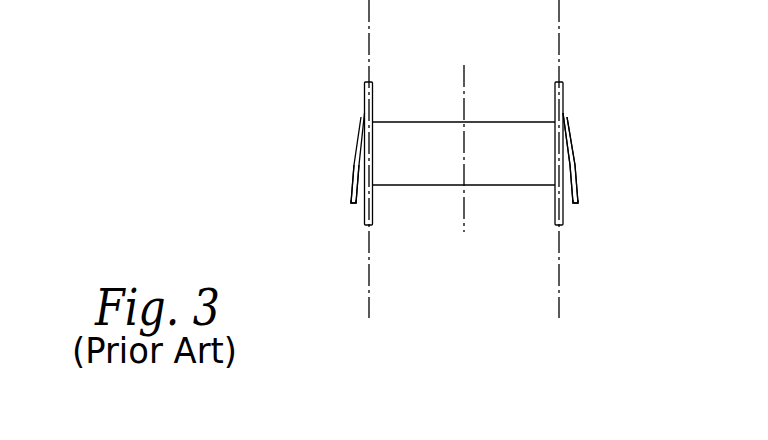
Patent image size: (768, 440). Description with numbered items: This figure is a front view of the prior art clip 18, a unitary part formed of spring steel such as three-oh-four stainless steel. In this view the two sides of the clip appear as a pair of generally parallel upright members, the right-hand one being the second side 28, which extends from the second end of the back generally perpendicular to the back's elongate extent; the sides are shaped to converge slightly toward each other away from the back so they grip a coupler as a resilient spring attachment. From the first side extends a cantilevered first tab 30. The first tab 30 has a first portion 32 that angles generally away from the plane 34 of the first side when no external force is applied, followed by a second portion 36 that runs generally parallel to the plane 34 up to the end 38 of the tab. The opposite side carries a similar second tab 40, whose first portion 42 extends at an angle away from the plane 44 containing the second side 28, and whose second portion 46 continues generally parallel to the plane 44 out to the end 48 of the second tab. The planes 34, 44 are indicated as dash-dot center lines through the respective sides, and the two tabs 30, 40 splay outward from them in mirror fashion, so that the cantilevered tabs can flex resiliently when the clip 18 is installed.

The clip 18 is at (697, 92).
The second side 28 is at (565, 90).
The first tab 30 is at (354, 156).
The first portion 32 is at (361, 131).
The plane 34 is at (370, 272).
The second portion 36 is at (350, 183).
The end 38 is at (353, 206).
The second tab 40 is at (576, 149).
The first portion 42 is at (568, 128).
The plane 44 is at (561, 300).
The second portion 46 is at (579, 188).
The end 48 is at (577, 205).